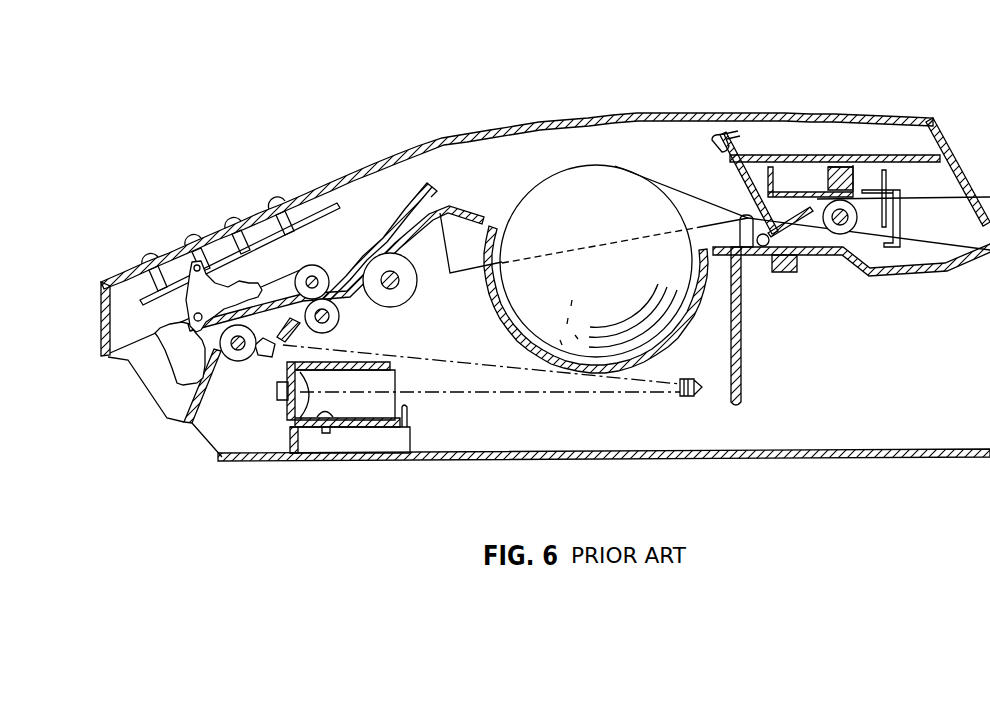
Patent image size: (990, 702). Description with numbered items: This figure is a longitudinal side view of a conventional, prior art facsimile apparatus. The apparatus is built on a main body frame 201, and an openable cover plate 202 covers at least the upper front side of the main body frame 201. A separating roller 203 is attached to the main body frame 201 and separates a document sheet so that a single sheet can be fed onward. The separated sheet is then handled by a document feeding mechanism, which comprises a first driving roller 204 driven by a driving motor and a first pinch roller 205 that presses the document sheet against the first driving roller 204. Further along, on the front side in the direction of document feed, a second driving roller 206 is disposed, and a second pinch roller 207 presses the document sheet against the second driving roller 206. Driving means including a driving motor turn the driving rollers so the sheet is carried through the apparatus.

The main body frame 201 is at (803, 460).
The openable cover plate 202 is at (508, 128).
The separating roller 203 is at (408, 290).
The first driving roller 204 is at (338, 318).
The first pinch roller 205 is at (322, 266).
The second driving roller 206 is at (228, 362).
The second pinch roller 207 is at (234, 275).